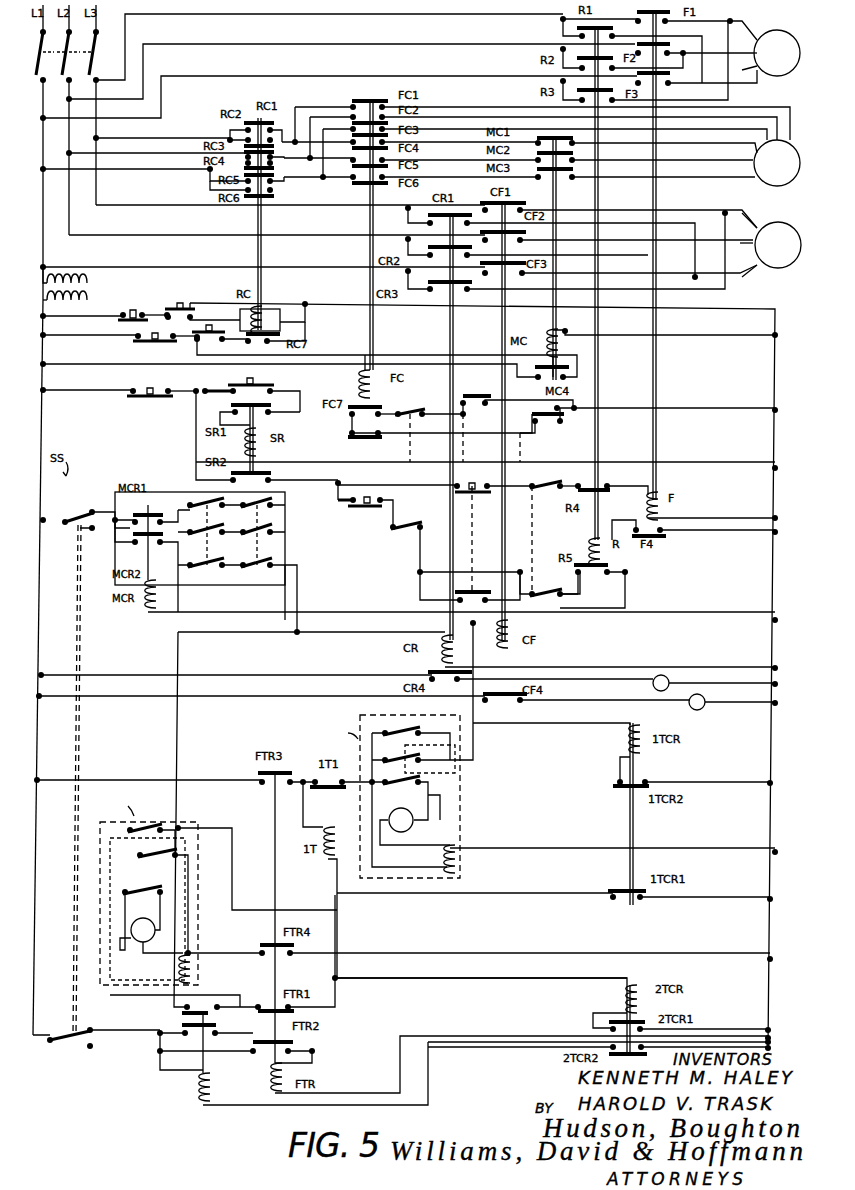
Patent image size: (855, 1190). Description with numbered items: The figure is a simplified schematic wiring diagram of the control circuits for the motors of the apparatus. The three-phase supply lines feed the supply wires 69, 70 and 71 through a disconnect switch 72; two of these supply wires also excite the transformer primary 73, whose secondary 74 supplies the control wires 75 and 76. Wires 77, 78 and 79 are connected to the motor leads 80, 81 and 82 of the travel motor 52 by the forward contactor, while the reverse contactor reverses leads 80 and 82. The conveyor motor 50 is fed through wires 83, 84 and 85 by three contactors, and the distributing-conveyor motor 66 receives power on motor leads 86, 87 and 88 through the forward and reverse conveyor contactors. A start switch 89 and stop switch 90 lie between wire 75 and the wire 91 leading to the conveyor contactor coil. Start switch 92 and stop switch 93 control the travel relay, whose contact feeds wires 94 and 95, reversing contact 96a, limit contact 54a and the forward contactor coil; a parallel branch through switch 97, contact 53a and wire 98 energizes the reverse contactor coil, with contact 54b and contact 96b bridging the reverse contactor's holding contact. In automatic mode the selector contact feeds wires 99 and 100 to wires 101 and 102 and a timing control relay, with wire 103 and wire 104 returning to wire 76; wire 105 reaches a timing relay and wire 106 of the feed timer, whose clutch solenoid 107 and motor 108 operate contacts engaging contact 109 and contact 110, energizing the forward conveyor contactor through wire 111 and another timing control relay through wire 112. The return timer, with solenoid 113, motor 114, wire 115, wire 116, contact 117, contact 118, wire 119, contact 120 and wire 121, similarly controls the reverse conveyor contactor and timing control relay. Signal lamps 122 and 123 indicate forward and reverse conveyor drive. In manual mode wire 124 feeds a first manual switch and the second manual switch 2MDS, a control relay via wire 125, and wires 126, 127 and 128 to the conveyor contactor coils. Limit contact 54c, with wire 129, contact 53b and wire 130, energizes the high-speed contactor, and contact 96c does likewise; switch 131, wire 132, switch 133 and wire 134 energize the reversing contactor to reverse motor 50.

The motor 50 is at (788, 158).
The motor 52 is at (790, 77).
The motor 66 is at (792, 227).
The supply wire 69 is at (46, 250).
The supply wire 70 is at (72, 214).
The supply wire 71 is at (100, 216).
The disconnect switch 72 is at (96, 76).
The transformer primary 73 is at (90, 283).
The transformer secondary 74 is at (88, 302).
The control circuit supply wire 75 is at (42, 430).
The control circuit supply wire 76 is at (340, 307).
The wire 77 is at (306, 78).
The wire 78 is at (326, 45).
The wire 79 is at (360, 15).
The motor lead 80 is at (758, 72).
The motor lead 81 is at (738, 52).
The motor lead 82 is at (756, 32).
The wire 83 is at (148, 171).
The wire 84 is at (148, 155).
The wire 85 is at (148, 140).
The motor lead 86 is at (747, 280).
The motor lead 87 is at (753, 244).
The motor lead 88 is at (756, 225).
The start switch 89 is at (224, 342).
The stop switch 90 is at (172, 344).
The wire 91 is at (420, 352).
The start switch 92 is at (232, 385).
The stop switch 93 is at (140, 385).
The wire 94 is at (194, 440).
The wire 95 is at (433, 482).
The contact of manually actuated reversing switch 96a is at (486, 466).
The contact of manually actuated reversing switch 96b is at (470, 576).
The contact of manually actuated reversing switch 96c is at (485, 398).
The manually actuated switch 97 is at (351, 434).
The wire 98 is at (525, 568).
The wire 99 is at (151, 1032).
The wire 100 is at (160, 1016).
The wire 101 is at (340, 1008).
The wire 102 is at (486, 982).
The wire 103 is at (280, 1111).
The wire 104 is at (489, 1028).
The wire 105 is at (213, 778).
The wire 106 is at (383, 714).
The clutch solenoid 107 is at (458, 863).
The motor 108 is at (404, 830).
The contact 109 is at (430, 789).
The contact 110 is at (450, 750).
The wire 111 is at (475, 748).
The wire 112 is at (580, 728).
The clutch solenoid 113 is at (196, 967).
The motor 114 is at (152, 939).
The wire 115 is at (114, 987).
The wire 116 is at (238, 950).
The contact 117 is at (142, 900).
The contact 118 is at (162, 880).
The wire 119 is at (179, 740).
The contact 120 is at (144, 820).
The wire 121 is at (337, 950).
The signal lamp 122 is at (705, 702).
The signal lamp 123 is at (669, 683).
The wire 124 is at (116, 550).
The wire 125 is at (242, 584).
The wire 126 is at (170, 575).
The wire 127 is at (320, 600).
The wire 128 is at (287, 600).
The wire 129 is at (94, 362).
The wire 130 is at (717, 412).
The manual switch 131 is at (192, 304).
The wire 132 is at (110, 320).
The normally closed manual switch 133 is at (138, 312).
The wire 134 is at (306, 321).
The contact of limit switch 53 53a is at (404, 522).
The contact of limit switch 53 53b is at (422, 413).
The contact of limit switch 54 54a is at (551, 472).
The contact of limit switch 54 54b is at (568, 590).
The contact of limit switch 54 54c is at (556, 433).
The manually actuated control switch 2MDS is at (284, 520).